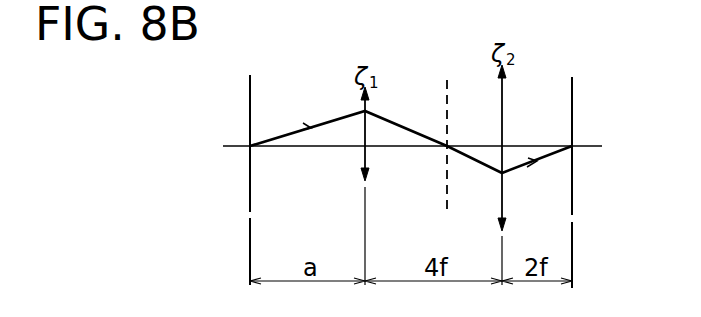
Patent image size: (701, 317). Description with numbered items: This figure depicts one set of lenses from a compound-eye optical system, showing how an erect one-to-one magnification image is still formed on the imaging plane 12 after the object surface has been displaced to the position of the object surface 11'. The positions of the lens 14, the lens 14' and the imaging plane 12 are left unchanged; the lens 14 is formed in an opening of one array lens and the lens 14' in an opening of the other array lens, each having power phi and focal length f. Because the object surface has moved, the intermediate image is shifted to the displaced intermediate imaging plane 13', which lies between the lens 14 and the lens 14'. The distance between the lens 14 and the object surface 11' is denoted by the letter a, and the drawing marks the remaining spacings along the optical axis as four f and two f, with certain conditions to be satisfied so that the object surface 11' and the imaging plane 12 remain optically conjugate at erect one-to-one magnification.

The displaced object surface 11' is at (288, 156).
The lens 14 is at (392, 156).
The displaced intermediate imaging plane 13' is at (472, 121).
The lens 14' is at (536, 157).
The imaging plane 12 is at (573, 88).